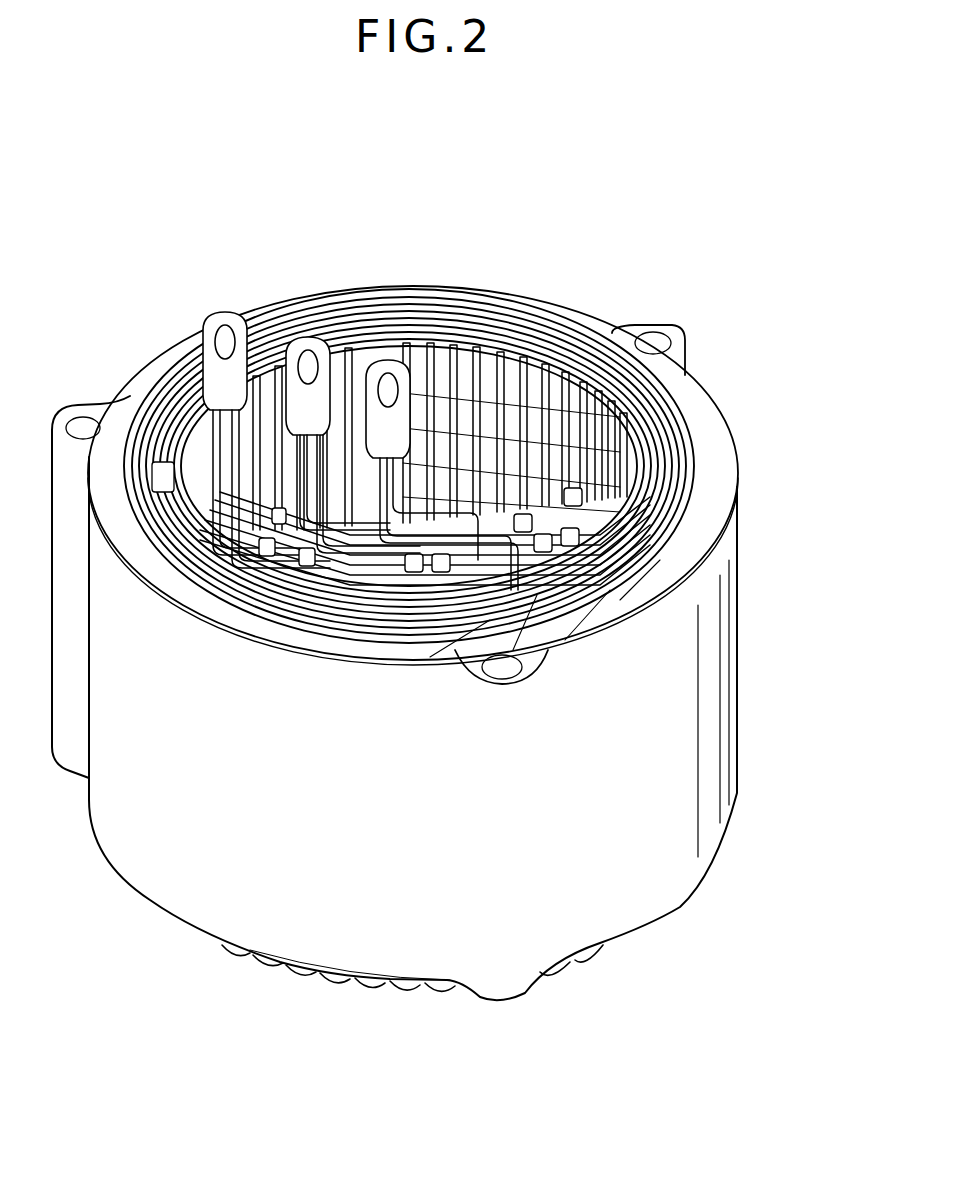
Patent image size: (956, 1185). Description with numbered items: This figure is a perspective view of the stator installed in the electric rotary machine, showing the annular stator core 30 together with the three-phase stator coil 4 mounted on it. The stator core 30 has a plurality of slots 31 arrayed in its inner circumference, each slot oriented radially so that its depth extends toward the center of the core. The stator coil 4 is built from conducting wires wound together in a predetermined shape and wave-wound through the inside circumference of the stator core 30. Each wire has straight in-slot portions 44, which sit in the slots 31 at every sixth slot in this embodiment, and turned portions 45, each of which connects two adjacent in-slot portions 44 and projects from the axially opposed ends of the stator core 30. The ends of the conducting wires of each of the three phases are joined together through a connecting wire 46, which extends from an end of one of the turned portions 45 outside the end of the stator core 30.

The stator coil 4 is at (409, 407).
The in-slot portions 44 is at (436, 450).
The turned portions 45 is at (570, 313).
The stator core 30 is at (713, 447).
The slots 31 is at (700, 508).
The connecting wire 46 is at (522, 540).